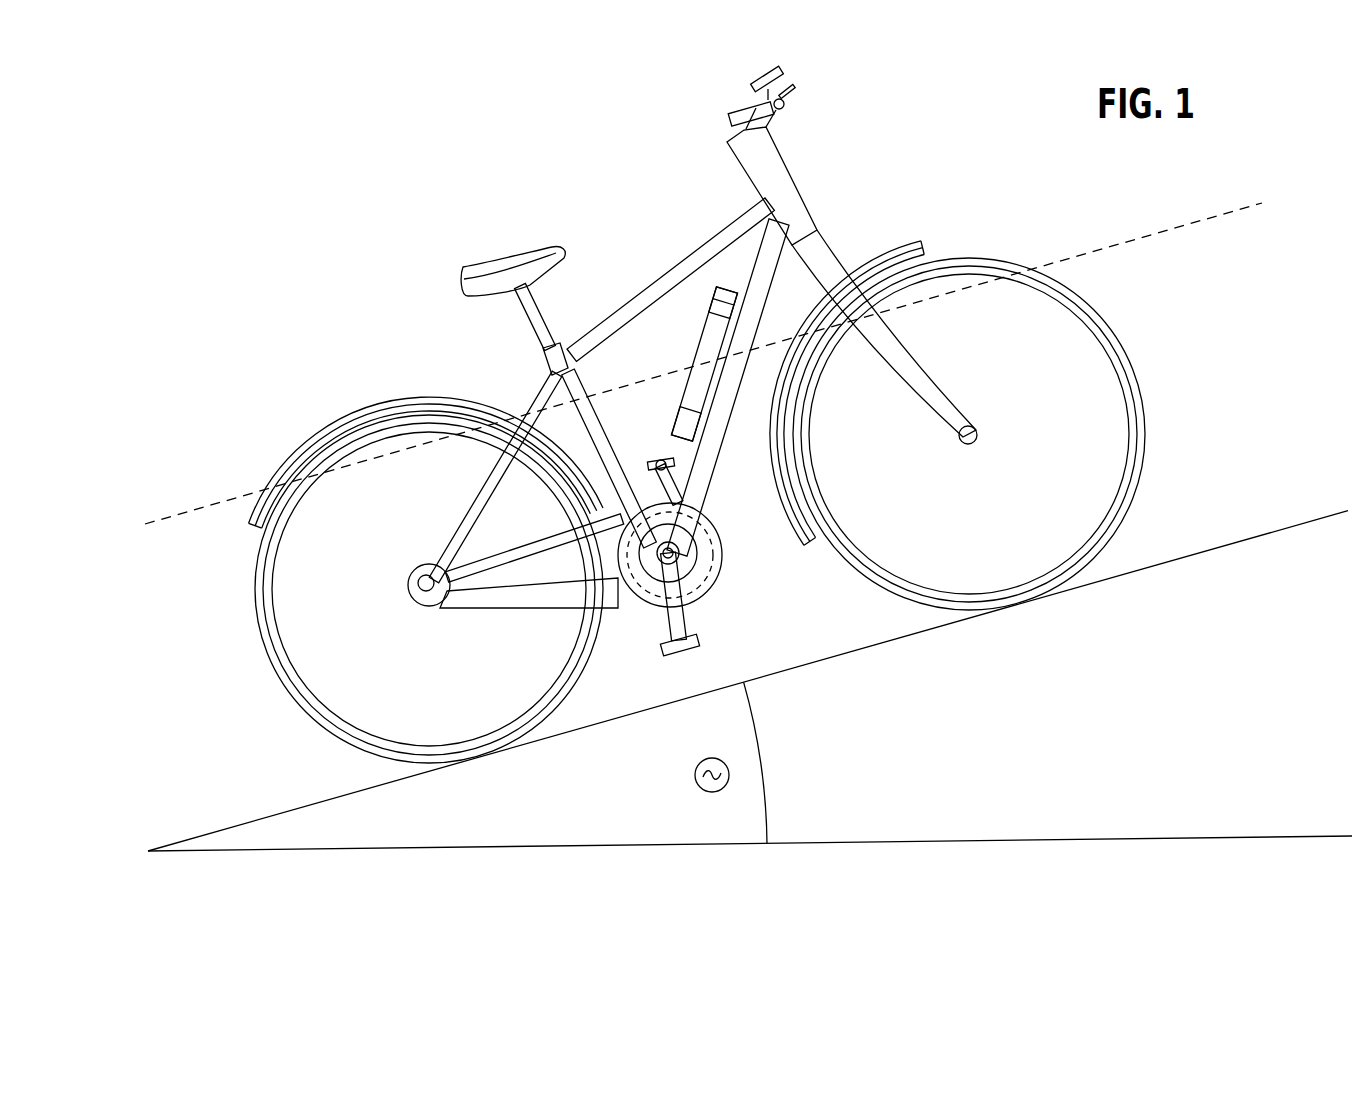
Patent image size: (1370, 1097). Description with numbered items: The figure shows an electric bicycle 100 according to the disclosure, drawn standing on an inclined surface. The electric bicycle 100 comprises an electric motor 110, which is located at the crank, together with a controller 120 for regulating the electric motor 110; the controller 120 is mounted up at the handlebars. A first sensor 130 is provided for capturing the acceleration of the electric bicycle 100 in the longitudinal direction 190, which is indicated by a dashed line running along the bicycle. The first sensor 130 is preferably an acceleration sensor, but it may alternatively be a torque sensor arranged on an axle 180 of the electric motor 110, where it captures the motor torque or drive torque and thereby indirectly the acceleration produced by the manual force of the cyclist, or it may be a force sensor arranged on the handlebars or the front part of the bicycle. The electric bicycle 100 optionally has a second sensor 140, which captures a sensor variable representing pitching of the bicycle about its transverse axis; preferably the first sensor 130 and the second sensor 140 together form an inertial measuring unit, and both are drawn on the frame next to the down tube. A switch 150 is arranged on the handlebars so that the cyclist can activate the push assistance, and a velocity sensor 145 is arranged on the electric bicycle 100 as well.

The electric bicycle 100 is at (399, 209).
The electric motor 110 is at (724, 573).
The controller 120 is at (760, 76).
The first sensor 130 is at (684, 406).
The second sensor 140 is at (672, 430).
The velocity sensor 145 is at (716, 290).
The switch 150 is at (792, 92).
The axle 180 is at (700, 550).
The longitudinal direction 190 is at (1213, 220).